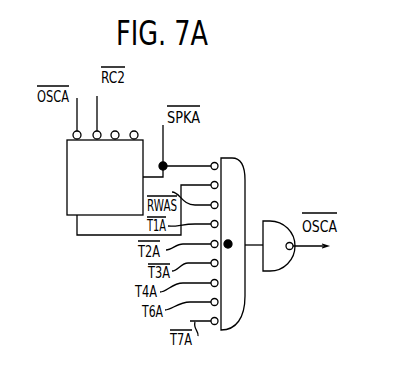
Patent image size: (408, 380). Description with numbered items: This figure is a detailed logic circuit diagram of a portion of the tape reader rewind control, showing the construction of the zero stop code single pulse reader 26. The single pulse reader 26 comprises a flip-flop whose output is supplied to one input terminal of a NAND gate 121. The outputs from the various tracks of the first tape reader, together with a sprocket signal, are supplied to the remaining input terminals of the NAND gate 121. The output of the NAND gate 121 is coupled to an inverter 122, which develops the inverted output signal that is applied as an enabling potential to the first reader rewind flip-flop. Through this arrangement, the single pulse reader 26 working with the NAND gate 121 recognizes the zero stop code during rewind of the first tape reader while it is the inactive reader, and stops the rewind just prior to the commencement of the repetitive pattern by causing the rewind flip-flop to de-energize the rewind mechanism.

The "0" stop code single pulse reader 26 is at (67, 168).
The NAND gate 121 is at (245, 287).
The inverter 122 is at (284, 262).